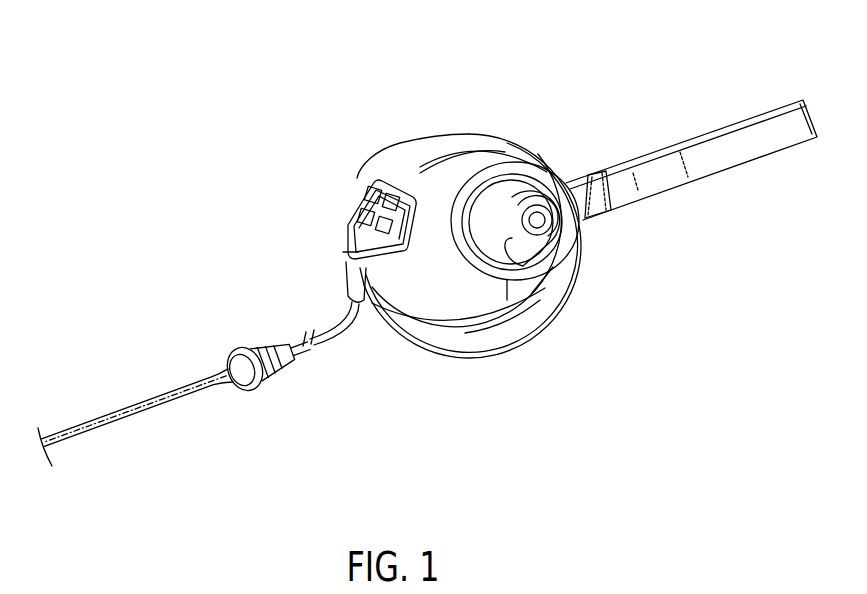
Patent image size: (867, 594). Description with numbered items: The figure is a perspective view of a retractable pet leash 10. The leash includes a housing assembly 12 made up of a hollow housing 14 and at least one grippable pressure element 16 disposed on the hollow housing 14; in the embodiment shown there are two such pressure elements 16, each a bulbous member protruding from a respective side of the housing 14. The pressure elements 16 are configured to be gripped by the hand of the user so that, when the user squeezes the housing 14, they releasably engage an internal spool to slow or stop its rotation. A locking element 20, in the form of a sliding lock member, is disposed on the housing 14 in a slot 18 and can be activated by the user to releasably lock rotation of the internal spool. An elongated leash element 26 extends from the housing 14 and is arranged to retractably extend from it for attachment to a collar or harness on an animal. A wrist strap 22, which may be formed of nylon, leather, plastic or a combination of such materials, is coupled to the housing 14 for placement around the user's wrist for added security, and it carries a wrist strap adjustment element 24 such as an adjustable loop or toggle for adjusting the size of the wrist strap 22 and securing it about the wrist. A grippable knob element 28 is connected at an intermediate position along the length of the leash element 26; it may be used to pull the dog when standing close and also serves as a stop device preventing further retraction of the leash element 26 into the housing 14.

The retractable pet leash 10 is at (170, 152).
The housing assembly 12 is at (454, 108).
The hollow housing 14 is at (390, 159).
The grippable pressure element 16 is at (527, 203).
The slot 18 is at (343, 257).
The locking element 20 is at (348, 223).
The wrist strap 22 is at (716, 150).
The wrist strap adjustment element 24 is at (606, 214).
The elongated leash element 26 is at (115, 416).
The grippable knob element 28 is at (232, 362).